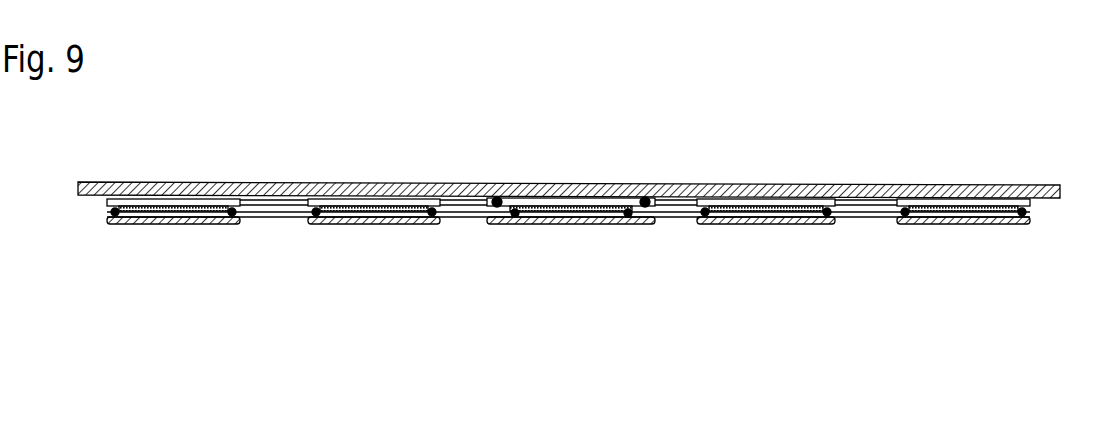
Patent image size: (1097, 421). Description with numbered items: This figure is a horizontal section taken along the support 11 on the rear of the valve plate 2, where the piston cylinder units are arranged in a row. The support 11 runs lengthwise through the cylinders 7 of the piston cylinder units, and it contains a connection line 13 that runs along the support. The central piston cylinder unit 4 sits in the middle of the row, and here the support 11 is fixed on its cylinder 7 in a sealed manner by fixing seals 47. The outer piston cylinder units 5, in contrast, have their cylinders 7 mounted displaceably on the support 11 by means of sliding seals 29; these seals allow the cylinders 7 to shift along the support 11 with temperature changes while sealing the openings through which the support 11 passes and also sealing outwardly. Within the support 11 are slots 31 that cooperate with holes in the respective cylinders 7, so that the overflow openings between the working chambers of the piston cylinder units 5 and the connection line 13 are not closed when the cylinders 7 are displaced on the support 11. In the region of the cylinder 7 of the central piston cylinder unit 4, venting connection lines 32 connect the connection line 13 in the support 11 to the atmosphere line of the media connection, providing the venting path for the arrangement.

The valve plate 2 is at (888, 185).
The central piston cylinder unit 4 is at (575, 224).
The piston cylinder unit 5 is at (160, 224).
The cylinder 7 is at (192, 223).
The support 11 is at (283, 217).
The connection line 13 is at (300, 211).
The sliding seal 29 is at (120, 223).
The slot 31 is at (178, 208).
The venting connection line 32 is at (497, 199).
The fixing seal 47 is at (512, 224).